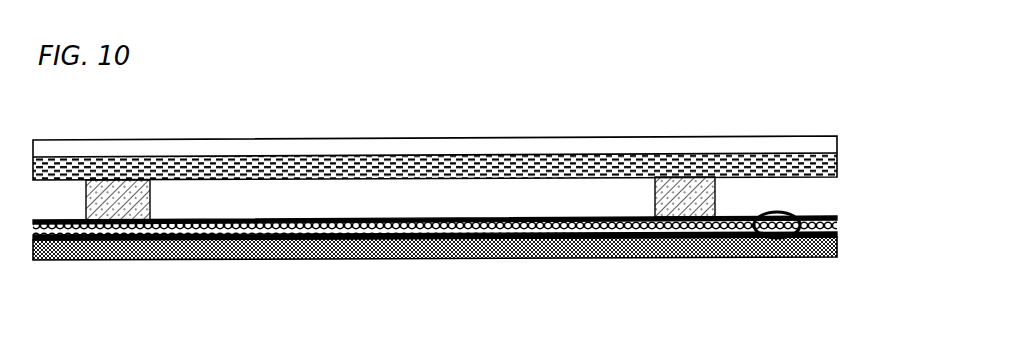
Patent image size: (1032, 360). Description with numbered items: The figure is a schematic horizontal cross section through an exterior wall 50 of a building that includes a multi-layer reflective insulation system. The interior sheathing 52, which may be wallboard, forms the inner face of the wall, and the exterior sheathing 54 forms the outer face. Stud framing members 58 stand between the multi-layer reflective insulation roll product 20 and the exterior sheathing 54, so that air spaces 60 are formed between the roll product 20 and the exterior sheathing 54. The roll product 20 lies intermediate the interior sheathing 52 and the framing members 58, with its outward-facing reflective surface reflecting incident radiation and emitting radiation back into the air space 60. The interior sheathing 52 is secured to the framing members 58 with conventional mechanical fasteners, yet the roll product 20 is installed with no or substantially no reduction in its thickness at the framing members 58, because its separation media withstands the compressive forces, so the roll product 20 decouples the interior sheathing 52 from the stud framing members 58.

The exterior wall 50 is at (583, 88).
The interior sheathing 52 is at (277, 255).
The exterior sheathing 54 is at (67, 170).
The stud framing members 58 is at (122, 192).
The multi-layer reflective insulation roll product 20 is at (210, 213).
The air spaces 60 is at (433, 203).